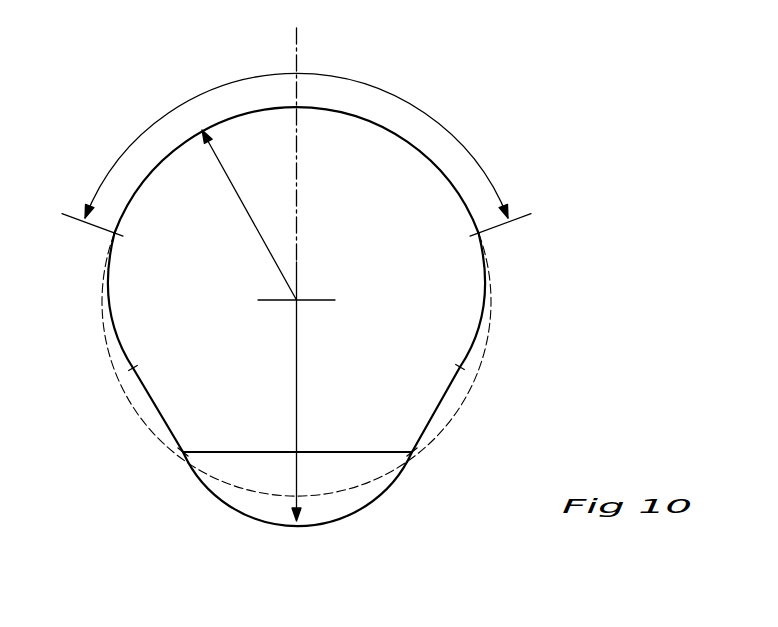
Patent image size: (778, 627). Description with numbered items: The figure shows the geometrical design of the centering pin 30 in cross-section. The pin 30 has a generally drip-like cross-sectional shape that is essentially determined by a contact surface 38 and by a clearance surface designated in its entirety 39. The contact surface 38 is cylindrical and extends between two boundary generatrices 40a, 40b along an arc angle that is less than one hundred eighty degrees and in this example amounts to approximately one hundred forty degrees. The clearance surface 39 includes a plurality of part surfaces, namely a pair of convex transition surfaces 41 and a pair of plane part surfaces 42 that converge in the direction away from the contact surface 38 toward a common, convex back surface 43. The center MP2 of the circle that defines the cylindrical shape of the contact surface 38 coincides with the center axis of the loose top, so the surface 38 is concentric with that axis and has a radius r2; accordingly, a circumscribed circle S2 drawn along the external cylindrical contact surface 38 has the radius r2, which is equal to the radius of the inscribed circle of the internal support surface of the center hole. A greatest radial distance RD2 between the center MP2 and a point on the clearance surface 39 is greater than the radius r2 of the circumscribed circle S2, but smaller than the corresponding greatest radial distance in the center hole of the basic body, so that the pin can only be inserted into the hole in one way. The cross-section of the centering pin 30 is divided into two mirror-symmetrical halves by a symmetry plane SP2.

The centering pin 30 is at (385, 123).
The contact surface 38 is at (167, 156).
The clearance surface 39 is at (335, 524).
The boundary generatrix 40a is at (113, 233).
The boundary generatrix 40b is at (480, 233).
The convex transition surface 41 is at (110, 330).
The plane part surface 42 is at (150, 396).
The back surface 43 is at (278, 524).
The symmetry plane SP2 is at (293, 48).
The center MP2 is at (296, 300).
The greatest radial distance RD2 is at (297, 408).
The radius r2 is at (233, 192).
The circumscribed circle S2 is at (487, 350).